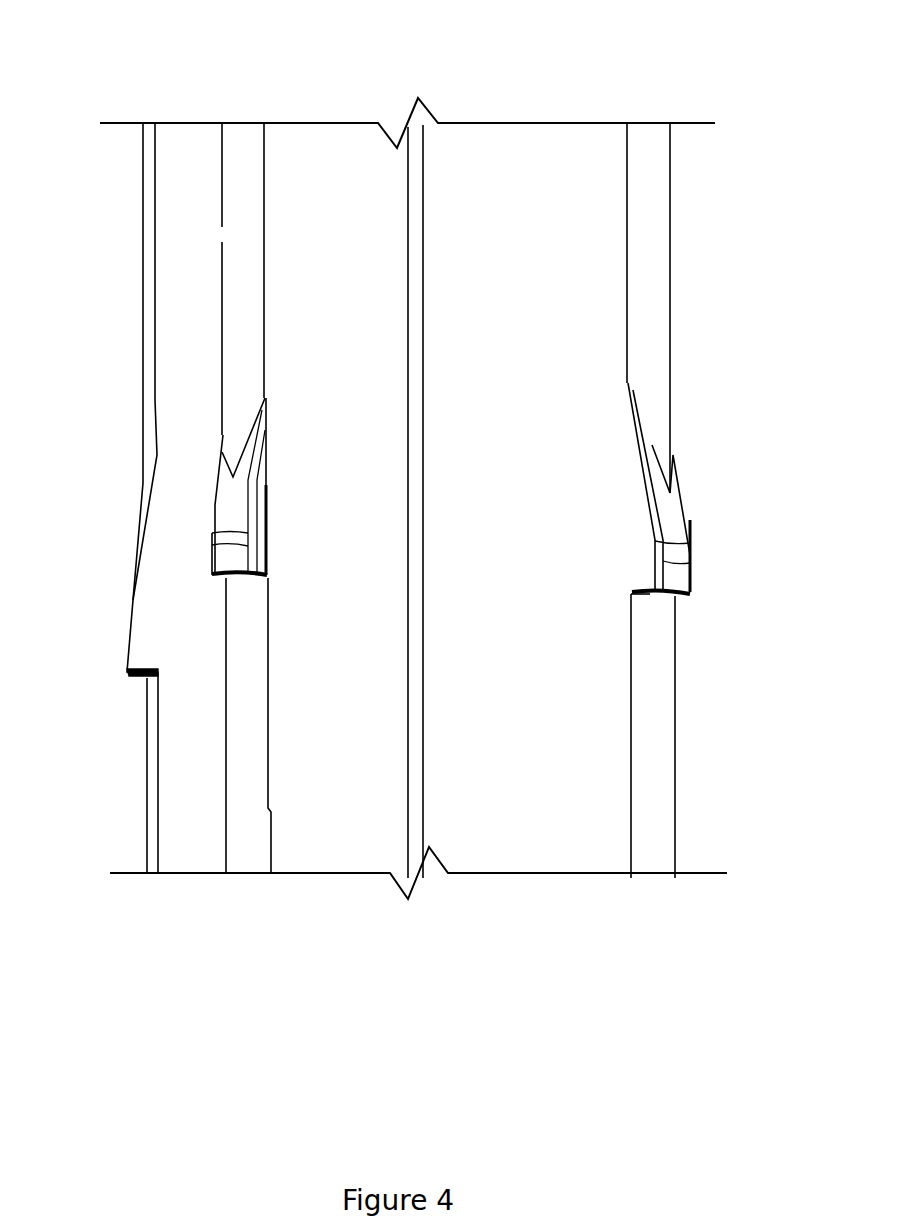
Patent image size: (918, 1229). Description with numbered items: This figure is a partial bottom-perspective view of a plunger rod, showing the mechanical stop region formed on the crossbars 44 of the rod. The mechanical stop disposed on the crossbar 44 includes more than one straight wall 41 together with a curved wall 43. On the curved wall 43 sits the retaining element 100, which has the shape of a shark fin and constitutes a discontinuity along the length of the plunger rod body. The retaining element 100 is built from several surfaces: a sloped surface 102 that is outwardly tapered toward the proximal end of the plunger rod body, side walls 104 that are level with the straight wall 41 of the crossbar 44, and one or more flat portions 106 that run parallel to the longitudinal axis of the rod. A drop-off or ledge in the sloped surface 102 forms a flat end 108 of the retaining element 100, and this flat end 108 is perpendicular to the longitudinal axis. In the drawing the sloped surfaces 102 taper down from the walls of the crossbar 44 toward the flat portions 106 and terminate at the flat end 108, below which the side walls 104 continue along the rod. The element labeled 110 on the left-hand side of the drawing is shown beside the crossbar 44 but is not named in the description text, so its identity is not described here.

The retaining element 100 is at (213, 101).
The outer tubular member 110 is at (212, 503).
The crossbar 44 is at (222, 334).
The straight wall 41 is at (600, 312).
The curved wall 43 is at (658, 382).
The sloped surface 102 is at (685, 520).
The flat portion 106 is at (683, 577).
The flat end 108 is at (683, 603).
The side wall 104 is at (641, 557).